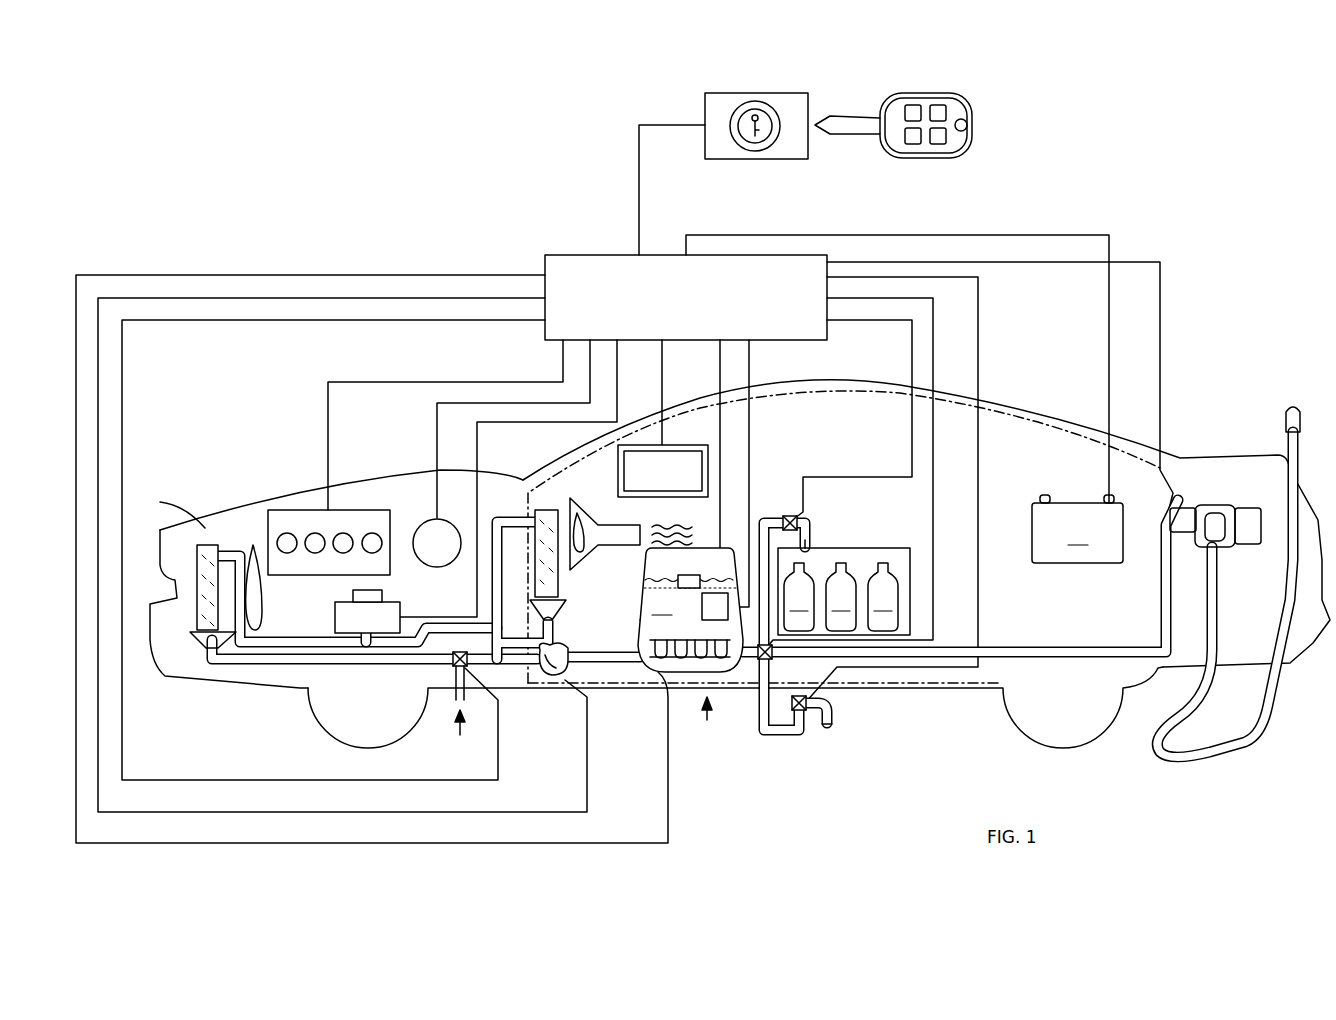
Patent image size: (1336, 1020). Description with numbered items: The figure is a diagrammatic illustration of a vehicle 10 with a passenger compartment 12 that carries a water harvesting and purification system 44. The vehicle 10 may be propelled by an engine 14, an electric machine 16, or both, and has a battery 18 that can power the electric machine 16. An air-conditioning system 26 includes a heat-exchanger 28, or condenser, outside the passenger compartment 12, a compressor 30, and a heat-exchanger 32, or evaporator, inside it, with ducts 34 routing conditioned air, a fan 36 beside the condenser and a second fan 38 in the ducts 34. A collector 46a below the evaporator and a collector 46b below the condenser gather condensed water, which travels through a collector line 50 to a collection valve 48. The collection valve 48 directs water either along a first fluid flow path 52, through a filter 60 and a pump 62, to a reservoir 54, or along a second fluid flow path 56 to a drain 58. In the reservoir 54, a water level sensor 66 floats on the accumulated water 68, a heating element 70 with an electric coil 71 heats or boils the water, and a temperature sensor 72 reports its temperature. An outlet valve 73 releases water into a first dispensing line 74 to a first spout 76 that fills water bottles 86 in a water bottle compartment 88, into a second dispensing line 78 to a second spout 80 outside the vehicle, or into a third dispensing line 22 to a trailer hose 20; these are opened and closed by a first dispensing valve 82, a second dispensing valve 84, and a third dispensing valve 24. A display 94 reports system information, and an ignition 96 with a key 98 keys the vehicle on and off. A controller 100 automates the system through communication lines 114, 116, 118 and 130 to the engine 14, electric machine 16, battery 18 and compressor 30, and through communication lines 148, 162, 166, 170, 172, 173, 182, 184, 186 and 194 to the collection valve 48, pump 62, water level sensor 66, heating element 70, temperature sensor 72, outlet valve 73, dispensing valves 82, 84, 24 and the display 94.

The vehicle 10 is at (263, 483).
The passenger compartment 12 is at (1020, 452).
The engine 14 is at (305, 508).
The electric machine 16 is at (425, 520).
The battery 18 is at (1077, 529).
The trailer hose 20 is at (1292, 410).
The third dispensing line 22 is at (1062, 646).
The third dispensing valve 24 is at (1175, 498).
The air-conditioning system 26 is at (205, 530).
The heat-exchanger 28 is at (196, 575).
The compressor 30 is at (335, 614).
The heat-exchanger 32 is at (556, 585).
The ducts 34 is at (583, 516).
The fan 36 is at (252, 546).
The second fan 38 is at (598, 548).
The water harvesting and purification system 44 is at (707, 720).
The collector 46a is at (554, 622).
The collector 46b is at (200, 665).
The collection valve 48 is at (452, 665).
The collector line 50 is at (297, 668).
The first fluid flow path 52 is at (607, 660).
The reservoir 54 is at (640, 620).
The second fluid flow path 56 is at (453, 700).
The drain 58 is at (460, 735).
The filter 60 is at (548, 676).
The pump 62 is at (569, 672).
The water level sensor 66 is at (690, 574).
The accumulated water 68 is at (662, 605).
The heating element 70 is at (690, 674).
The electric coil 71 is at (660, 665).
The temperature sensor 72 is at (728, 592).
The outlet valve 73 is at (762, 660).
The first dispensing line 74 is at (762, 522).
The first spout 76 is at (806, 546).
The second dispensing line 78 is at (774, 740).
The second spout 80 is at (832, 718).
The first dispensing valve 82 is at (797, 518).
The second dispensing valve 84 is at (804, 712).
The water bottle 86 is at (841, 597).
The water bottle compartment 88 is at (892, 547).
The display 94 is at (678, 445).
The ignition 96 is at (705, 120).
The key 98 is at (973, 124).
The controller 100 is at (590, 253).
The communication line 114 is at (328, 440).
The communication line 116 is at (437, 460).
The communication line 118 is at (1109, 340).
The communication line 130 is at (478, 462).
The communication line 148 is at (220, 779).
The communication line 162 is at (305, 811).
The communication line 166 is at (720, 380).
The communication line 170 is at (390, 842).
The communication line 172 is at (749, 448).
The communication line 173 is at (933, 360).
The communication line 182 is at (912, 375).
The communication line 184 is at (978, 355).
The communication line 186 is at (1160, 290).
The communication line 194 is at (662, 405).